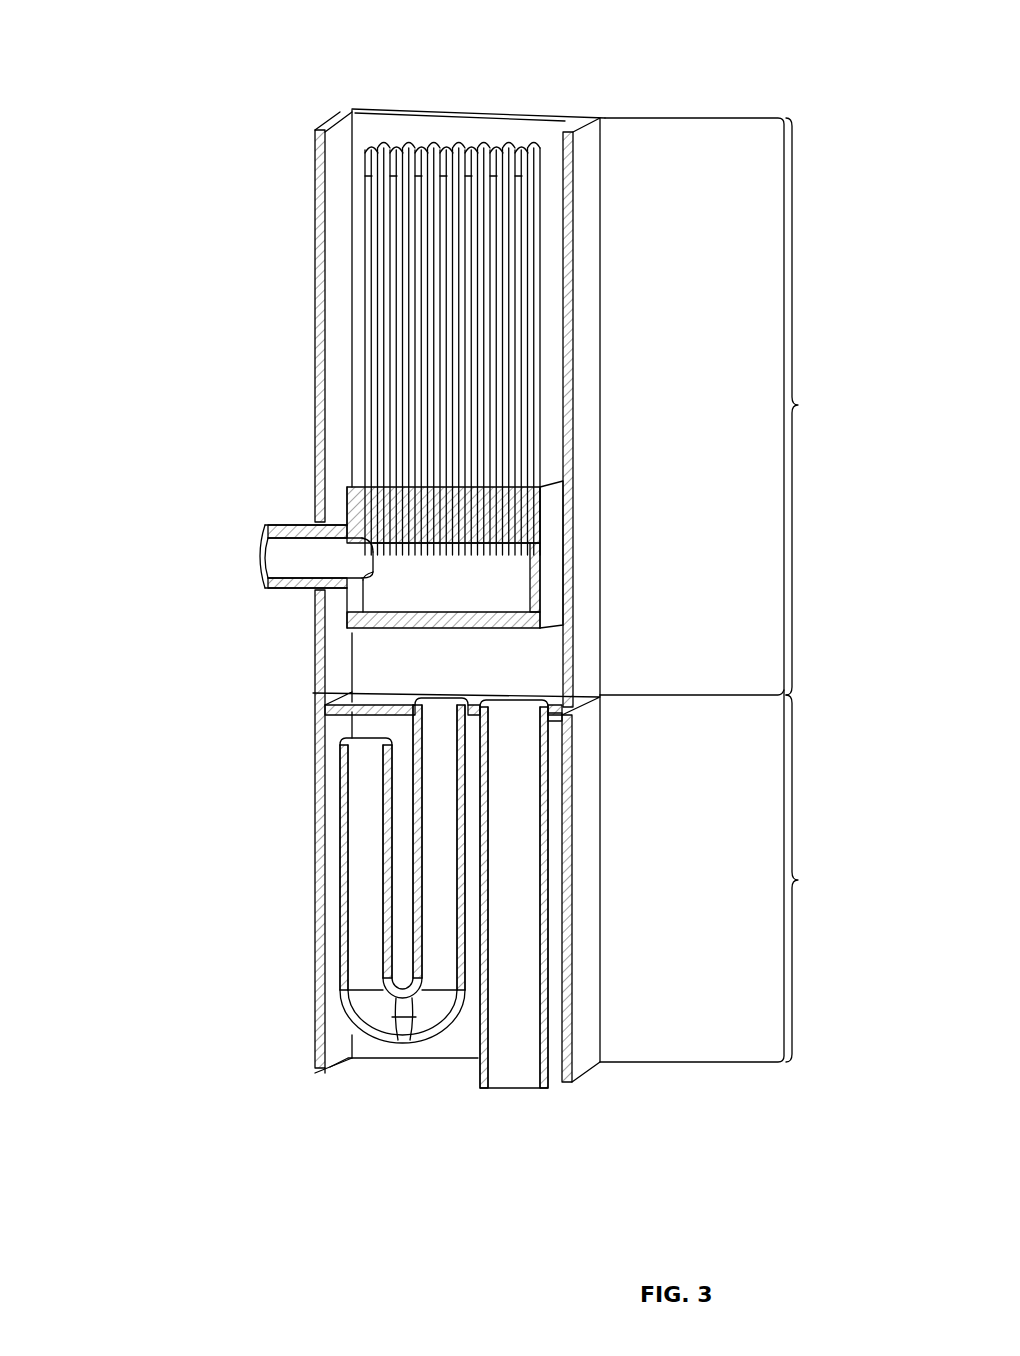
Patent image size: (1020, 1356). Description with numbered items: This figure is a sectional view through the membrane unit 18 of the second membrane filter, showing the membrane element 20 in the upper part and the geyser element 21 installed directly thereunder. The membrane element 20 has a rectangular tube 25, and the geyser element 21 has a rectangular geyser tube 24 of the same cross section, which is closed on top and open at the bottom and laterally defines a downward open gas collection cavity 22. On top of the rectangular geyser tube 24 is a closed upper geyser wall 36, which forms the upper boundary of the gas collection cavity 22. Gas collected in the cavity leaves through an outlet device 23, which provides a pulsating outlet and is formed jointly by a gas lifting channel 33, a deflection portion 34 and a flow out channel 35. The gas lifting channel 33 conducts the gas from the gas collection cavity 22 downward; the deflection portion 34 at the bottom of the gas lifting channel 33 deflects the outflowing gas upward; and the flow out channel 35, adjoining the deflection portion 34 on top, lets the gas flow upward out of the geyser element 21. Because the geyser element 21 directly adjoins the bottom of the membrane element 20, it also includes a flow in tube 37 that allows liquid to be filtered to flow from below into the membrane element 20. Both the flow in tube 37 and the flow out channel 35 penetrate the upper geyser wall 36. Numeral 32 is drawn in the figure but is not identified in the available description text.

The membrane unit 18 is at (688, 100).
The membrane element 20 is at (732, 406).
The geyser element 21 is at (825, 878).
The gas collection cavity 22 is at (405, 833).
The outlet device 23 is at (358, 1076).
The rectangular geyser tube 24 is at (568, 858).
The rectangular tube 25 is at (568, 412).
The bottom plate 32 is at (417, 1067).
The gas lifting channel 33 is at (368, 800).
The deflection portion 34 is at (407, 1015).
The flow out channel 35 is at (440, 868).
The upper geyser wall 36 is at (360, 708).
The flow in tube 37 is at (500, 1073).